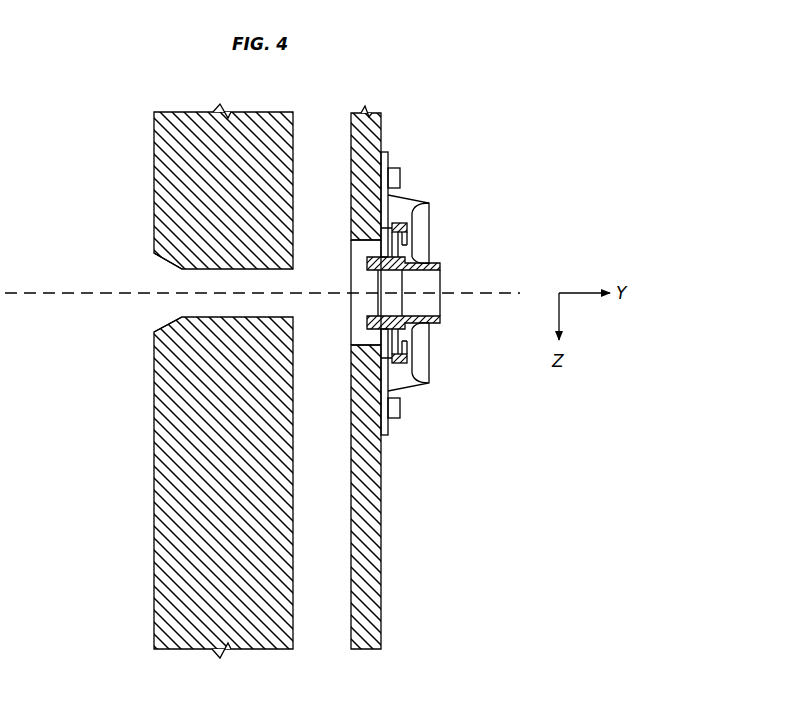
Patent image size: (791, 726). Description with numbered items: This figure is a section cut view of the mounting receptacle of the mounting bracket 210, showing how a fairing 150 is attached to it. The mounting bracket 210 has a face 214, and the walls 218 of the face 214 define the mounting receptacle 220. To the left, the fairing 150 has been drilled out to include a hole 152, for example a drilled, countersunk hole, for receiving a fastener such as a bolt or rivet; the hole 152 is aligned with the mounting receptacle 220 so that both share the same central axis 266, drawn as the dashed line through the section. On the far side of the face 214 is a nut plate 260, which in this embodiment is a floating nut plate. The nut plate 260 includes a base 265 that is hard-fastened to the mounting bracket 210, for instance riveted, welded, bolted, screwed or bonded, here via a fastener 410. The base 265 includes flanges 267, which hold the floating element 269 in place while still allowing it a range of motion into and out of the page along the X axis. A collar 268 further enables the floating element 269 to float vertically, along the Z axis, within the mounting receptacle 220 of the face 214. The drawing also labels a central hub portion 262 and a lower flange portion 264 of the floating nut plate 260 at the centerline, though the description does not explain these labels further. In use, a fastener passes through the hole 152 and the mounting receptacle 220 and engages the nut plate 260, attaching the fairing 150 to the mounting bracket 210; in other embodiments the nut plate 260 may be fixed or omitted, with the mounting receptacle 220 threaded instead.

The fairing 150 is at (180, 112).
The hole 152 is at (167, 313).
The central axis 266 is at (62, 293).
The face 214 is at (375, 113).
The walls 218 is at (362, 240).
The mounting receptacle 220 is at (352, 329).
The base 265 is at (385, 155).
The fastener 410 is at (401, 170).
The flanges 267 is at (429, 206).
The collar 268 is at (407, 227).
The hub 262 is at (426, 289).
The lower flange 264 is at (440, 322).
The floating element 269 is at (367, 318).
The nut plate 260 is at (460, 386).
The mounting bracket 210 is at (417, 497).